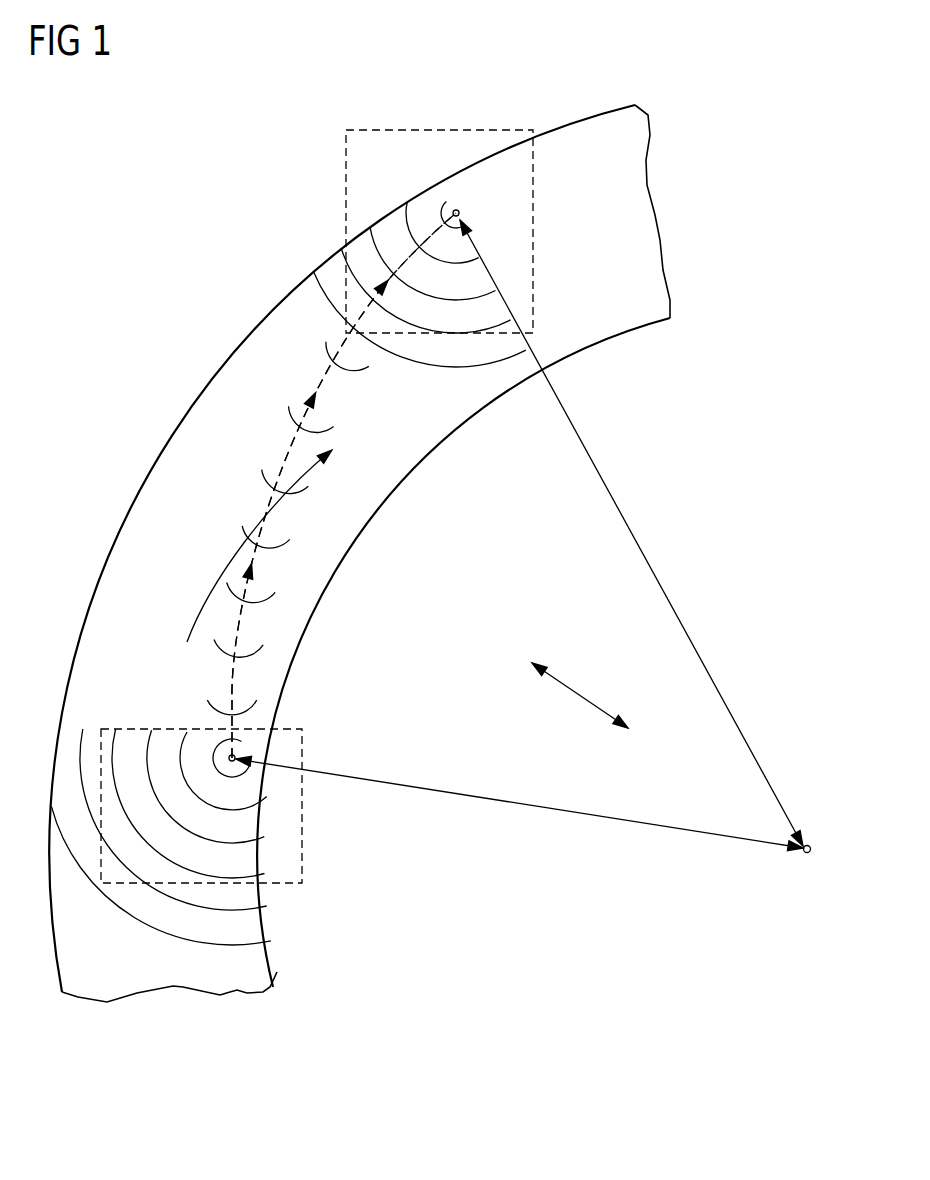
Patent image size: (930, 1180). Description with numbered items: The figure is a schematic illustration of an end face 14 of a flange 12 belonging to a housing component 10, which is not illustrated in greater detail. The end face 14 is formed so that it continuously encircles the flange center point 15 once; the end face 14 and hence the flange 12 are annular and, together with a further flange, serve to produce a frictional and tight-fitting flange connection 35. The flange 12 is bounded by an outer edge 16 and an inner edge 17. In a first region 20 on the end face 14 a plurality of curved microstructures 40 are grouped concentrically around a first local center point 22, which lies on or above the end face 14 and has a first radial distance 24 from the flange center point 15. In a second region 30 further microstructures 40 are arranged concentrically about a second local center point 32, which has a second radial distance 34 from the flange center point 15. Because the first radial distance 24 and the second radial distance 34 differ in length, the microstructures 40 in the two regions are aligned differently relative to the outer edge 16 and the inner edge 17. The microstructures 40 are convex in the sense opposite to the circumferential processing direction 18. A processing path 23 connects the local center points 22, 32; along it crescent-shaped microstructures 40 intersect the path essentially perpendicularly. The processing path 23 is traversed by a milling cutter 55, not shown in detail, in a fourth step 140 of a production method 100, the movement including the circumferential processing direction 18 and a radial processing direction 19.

The housing component 10 is at (137, 226).
The flange 12 is at (163, 493).
The end face 14 is at (169, 723).
The flange center point 15 is at (805, 855).
The outer edge 16 is at (230, 358).
The inner edge 17 is at (390, 498).
The circumferential processing direction 18 is at (198, 613).
The radial processing direction 19 is at (580, 690).
The first region 20 is at (302, 848).
The first local center point 22 is at (236, 756).
The processing path 23 is at (338, 461).
The first radial distance 24 is at (592, 818).
The second region 30 is at (393, 129).
The second local center point 32 is at (462, 212).
The second radial distance 34 is at (648, 560).
The flange connection 35 is at (100, 341).
The microstructures 40 is at (373, 247).
The milling cutter 55 is at (453, 427).
The production method 100 is at (363, 524).
The fourth step 140 is at (237, 633).